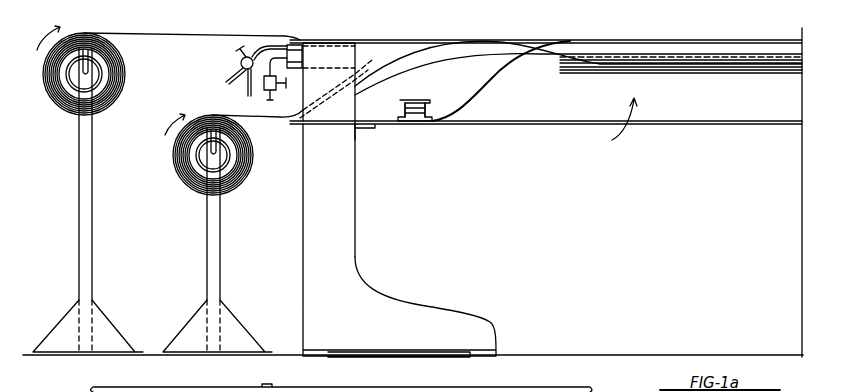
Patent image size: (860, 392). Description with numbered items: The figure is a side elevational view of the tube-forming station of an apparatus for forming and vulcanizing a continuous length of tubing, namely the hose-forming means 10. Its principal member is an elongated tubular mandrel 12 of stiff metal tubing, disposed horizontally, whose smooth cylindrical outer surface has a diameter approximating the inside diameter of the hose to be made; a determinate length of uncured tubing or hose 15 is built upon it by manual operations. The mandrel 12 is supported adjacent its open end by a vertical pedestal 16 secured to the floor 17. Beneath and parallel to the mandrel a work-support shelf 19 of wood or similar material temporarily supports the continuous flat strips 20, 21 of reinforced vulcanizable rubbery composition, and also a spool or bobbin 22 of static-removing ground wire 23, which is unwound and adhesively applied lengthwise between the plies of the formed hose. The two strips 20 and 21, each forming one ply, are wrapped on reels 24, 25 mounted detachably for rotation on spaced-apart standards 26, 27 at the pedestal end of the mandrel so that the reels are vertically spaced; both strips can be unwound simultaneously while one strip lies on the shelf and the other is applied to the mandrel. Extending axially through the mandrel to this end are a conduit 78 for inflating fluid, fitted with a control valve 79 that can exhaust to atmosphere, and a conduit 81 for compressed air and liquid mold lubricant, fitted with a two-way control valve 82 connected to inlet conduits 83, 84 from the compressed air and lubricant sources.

The hose-forming means 10 is at (613, 124).
The tubular mandrel 12 is at (378, 48).
The tubing or hose 15 is at (735, 45).
The vertical pedestal 16 is at (355, 205).
The floor 17 is at (566, 355).
The work-support shelf 19 is at (730, 125).
The continuous flat strip 20 is at (258, 121).
The continuous flat strip 21 is at (198, 35).
The spool or bobbin 22 is at (415, 100).
The ground wire 23 is at (665, 57).
The reel 24 is at (201, 166).
The reel 25 is at (94, 88).
The standard 26 is at (215, 260).
The standard 27 is at (85, 258).
The conduit 78 is at (292, 45).
The control valve 79 is at (266, 92).
The conduit 81 is at (262, 50).
The two-way control valve 82 is at (233, 58).
The inlet conduit 83 is at (226, 77).
The inlet conduit 84 is at (248, 88).